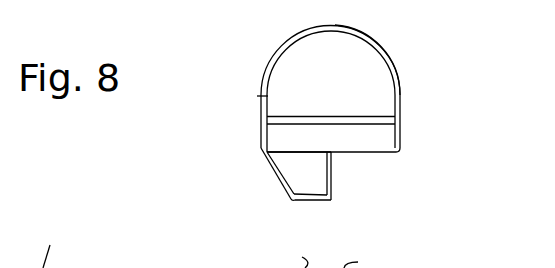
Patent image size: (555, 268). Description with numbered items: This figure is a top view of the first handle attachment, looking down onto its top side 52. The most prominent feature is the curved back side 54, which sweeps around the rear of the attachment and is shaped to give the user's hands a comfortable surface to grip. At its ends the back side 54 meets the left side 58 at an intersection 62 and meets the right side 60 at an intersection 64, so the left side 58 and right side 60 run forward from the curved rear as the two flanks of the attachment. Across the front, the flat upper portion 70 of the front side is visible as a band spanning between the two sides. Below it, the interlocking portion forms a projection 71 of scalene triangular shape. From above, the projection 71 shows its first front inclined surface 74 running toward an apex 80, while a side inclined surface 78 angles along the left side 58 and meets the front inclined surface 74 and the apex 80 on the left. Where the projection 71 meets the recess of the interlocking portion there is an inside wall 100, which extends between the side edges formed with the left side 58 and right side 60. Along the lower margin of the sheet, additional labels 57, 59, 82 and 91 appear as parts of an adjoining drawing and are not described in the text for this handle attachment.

The top side 52 is at (293, 63).
The back side 54 is at (335, 25).
The intersection 62 is at (265, 97).
The left side 58 is at (260, 110).
The upper portion 70 is at (275, 128).
The side inclined surface 78 is at (275, 173).
The first front inclined surface 74 is at (292, 173).
The apex 80 is at (301, 200).
The inside wall 100 is at (331, 174).
The right side 60 is at (395, 110).
The intersection 64 is at (395, 97).
The projection 71 is at (273, 213).
The element 57 is at (58, 243).
The element 59 is at (64, 263).
The element 82 is at (287, 258).
The element 91 is at (367, 259).